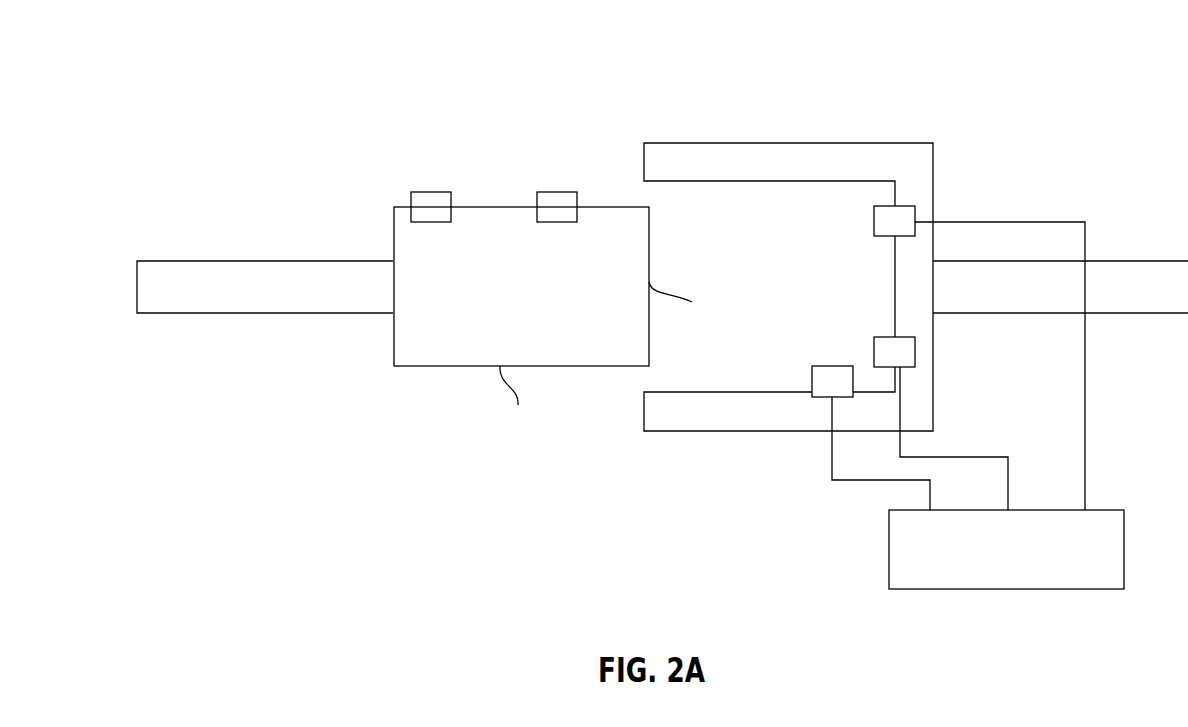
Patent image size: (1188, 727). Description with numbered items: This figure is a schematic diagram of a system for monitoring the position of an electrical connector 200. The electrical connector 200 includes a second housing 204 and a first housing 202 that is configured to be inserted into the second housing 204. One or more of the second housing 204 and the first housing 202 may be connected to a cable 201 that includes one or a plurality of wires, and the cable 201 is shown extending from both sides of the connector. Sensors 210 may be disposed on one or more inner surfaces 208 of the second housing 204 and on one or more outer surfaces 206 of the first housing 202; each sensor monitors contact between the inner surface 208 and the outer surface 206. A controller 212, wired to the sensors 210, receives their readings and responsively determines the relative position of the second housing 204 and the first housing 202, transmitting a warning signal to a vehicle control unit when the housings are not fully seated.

The electrical connector 200 is at (240, 68).
The cable 201 is at (156, 251).
The first housing 202 is at (470, 131).
The second housing 204 is at (852, 136).
The outer surface 206 is at (618, 362).
The inner surface 208 is at (768, 183).
The sensors 210 is at (423, 188).
The controller 212 is at (1099, 509).